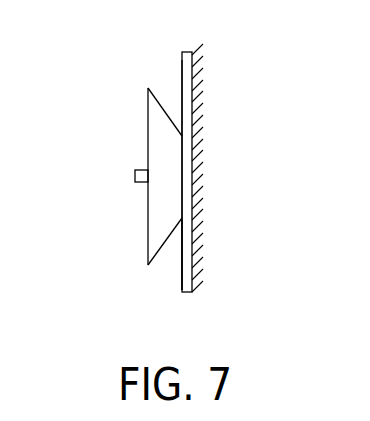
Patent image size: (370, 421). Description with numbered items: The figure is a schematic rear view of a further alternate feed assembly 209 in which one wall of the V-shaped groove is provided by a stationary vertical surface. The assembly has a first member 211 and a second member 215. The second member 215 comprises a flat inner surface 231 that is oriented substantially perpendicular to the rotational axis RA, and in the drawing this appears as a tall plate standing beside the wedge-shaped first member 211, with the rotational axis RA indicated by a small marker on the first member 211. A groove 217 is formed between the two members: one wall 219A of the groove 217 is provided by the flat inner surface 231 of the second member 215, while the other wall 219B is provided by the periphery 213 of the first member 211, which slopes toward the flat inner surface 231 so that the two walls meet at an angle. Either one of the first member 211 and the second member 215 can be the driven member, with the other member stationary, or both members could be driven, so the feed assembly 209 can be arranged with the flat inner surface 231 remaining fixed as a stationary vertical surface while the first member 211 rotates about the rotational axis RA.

The feed assembly 209 is at (233, 102).
The first member 211 is at (103, 175).
The periphery of the first member 213 is at (103, 92).
The second member 215 is at (188, 292).
The groove 217 is at (170, 248).
The wall of the groove 219A is at (182, 93).
The other wall of the groove 219B is at (163, 97).
The flat inner surface 231 is at (183, 258).
The rotational axis RA is at (135, 175).